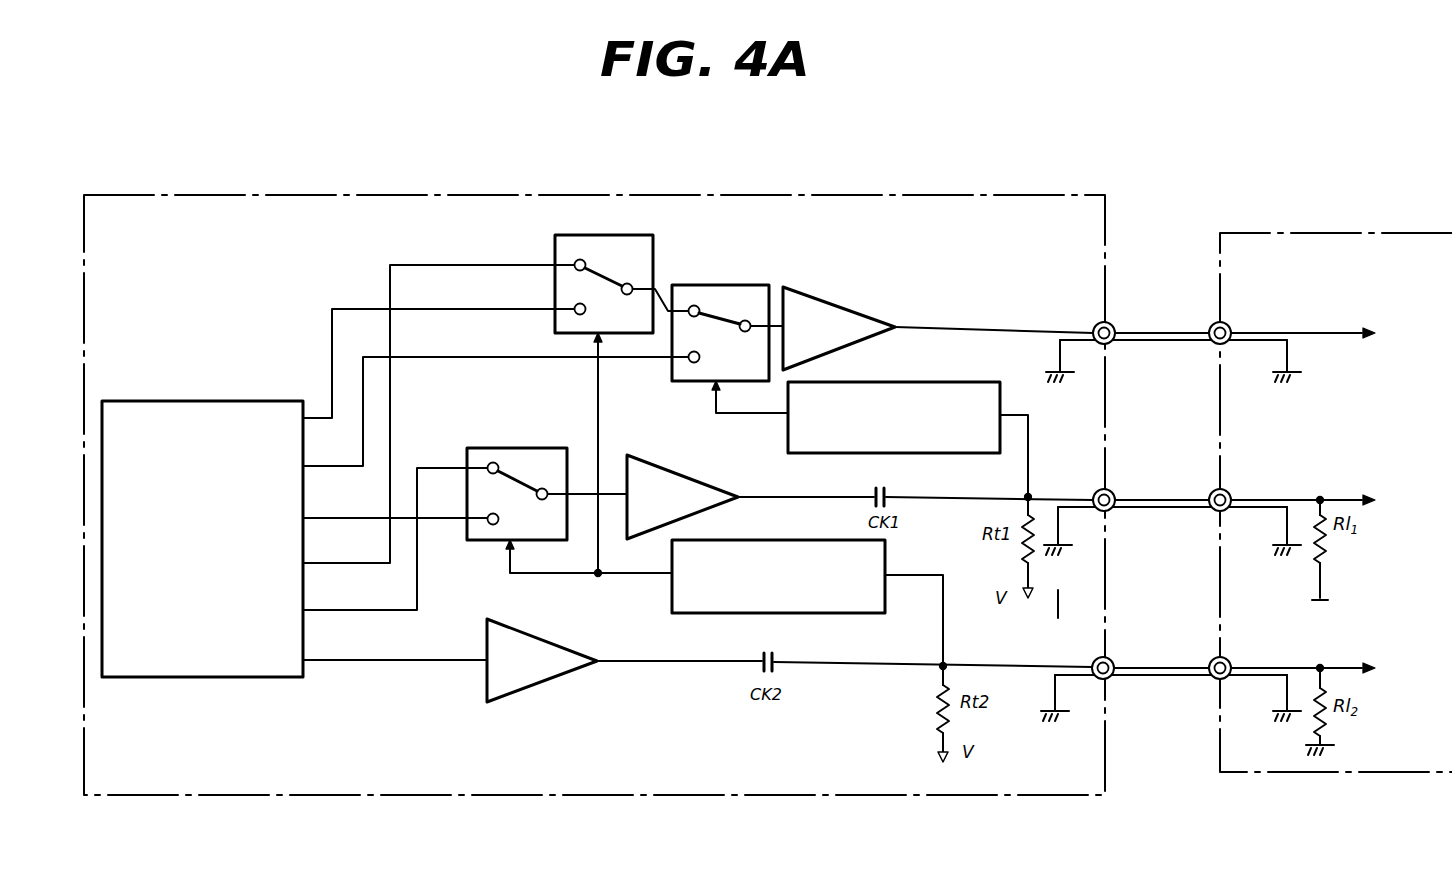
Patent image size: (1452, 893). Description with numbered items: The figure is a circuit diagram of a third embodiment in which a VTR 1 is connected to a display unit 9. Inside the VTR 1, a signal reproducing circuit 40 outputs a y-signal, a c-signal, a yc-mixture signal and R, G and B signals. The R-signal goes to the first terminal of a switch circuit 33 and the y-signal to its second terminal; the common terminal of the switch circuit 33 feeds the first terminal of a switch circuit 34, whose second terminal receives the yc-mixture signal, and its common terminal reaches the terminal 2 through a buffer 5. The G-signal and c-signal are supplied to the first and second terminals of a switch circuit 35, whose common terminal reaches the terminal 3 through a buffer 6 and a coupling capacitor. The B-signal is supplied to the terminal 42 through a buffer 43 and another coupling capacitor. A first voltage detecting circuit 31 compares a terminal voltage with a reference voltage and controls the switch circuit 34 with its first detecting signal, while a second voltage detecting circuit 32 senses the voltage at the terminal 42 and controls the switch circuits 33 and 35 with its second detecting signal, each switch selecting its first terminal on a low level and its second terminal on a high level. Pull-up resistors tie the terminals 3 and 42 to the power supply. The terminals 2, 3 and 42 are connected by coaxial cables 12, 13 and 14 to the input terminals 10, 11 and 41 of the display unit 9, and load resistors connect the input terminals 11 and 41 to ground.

The VTR 1 is at (900, 195).
The display unit 9 is at (1276, 232).
The signal reproducing circuit 40 is at (150, 400).
The switch circuit 33 is at (655, 253).
The switch circuit 34 is at (708, 285).
The switch circuit 35 is at (478, 447).
The buffer 5 is at (823, 292).
The buffer 6 is at (680, 468).
The buffer 43 is at (532, 640).
The first voltage detecting circuit 31 is at (907, 382).
The second voltage detecting circuit 32 is at (770, 540).
The terminal 2 is at (1110, 322).
The terminal 3 is at (1110, 511).
The terminal 42 is at (1122, 641).
The input terminal 10 is at (1240, 304).
The input terminal 11 is at (1213, 490).
The input terminal 41 is at (1213, 655).
The coaxial cable 12 is at (1165, 342).
The coaxial cable 13 is at (1173, 510).
The coaxial cable 14 is at (1156, 678).